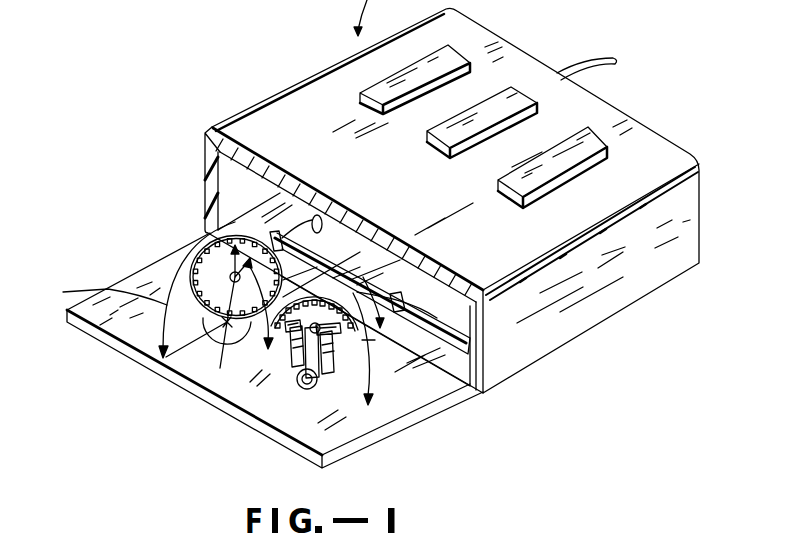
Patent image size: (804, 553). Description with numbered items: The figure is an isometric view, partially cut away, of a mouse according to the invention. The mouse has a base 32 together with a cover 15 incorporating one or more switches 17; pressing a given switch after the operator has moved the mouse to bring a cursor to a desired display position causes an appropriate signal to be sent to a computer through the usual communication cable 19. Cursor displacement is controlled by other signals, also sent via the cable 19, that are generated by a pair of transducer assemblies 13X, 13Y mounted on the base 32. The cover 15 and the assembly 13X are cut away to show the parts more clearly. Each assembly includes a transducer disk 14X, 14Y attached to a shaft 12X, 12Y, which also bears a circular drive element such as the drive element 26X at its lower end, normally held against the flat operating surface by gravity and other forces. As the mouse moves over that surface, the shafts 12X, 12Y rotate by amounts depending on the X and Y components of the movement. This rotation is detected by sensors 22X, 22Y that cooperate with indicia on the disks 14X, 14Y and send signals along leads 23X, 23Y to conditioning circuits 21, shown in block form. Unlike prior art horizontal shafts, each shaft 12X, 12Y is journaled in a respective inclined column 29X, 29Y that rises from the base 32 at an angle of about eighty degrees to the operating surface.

The cover 15 is at (660, 140).
The switches 17 is at (535, 157).
The communication cable 19 is at (572, 66).
The conditioning circuits 21 is at (483, 350).
The base 32 is at (390, 433).
The lead 23Y is at (317, 215).
The lead 23X is at (427, 312).
The sensor 22Y is at (273, 232).
The sensor 22X is at (333, 287).
The shaft 12Y is at (232, 273).
The shaft 12X is at (346, 366).
The transducer assembly 13Y is at (158, 251).
The transducer assembly 13X is at (380, 329).
The transducer disk 14Y is at (185, 305).
The transducer disk 14X is at (306, 362).
The drive element 26X is at (307, 390).
The inclined column 29Y is at (210, 335).
The inclined column 29X is at (340, 380).